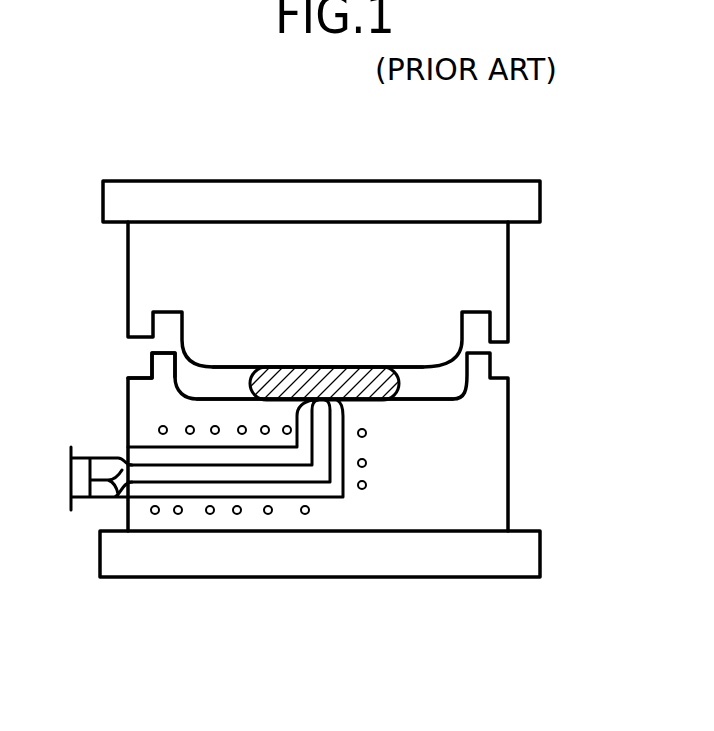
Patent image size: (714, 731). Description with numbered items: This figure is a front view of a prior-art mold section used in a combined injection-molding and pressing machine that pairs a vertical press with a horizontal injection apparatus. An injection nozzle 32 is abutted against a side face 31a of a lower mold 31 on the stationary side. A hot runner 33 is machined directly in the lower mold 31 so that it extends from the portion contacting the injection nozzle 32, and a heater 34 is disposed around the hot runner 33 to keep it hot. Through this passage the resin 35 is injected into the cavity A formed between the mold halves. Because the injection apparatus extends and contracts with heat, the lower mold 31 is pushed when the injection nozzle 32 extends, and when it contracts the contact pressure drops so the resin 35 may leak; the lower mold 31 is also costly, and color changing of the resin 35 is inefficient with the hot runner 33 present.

The lower mold 31 is at (512, 462).
The side face 31a is at (127, 386).
The injection nozzle 32 is at (95, 456).
The hot runner 33 is at (157, 477).
The heater 34 is at (362, 489).
The resin 35 is at (366, 372).
The cavity A is at (226, 384).